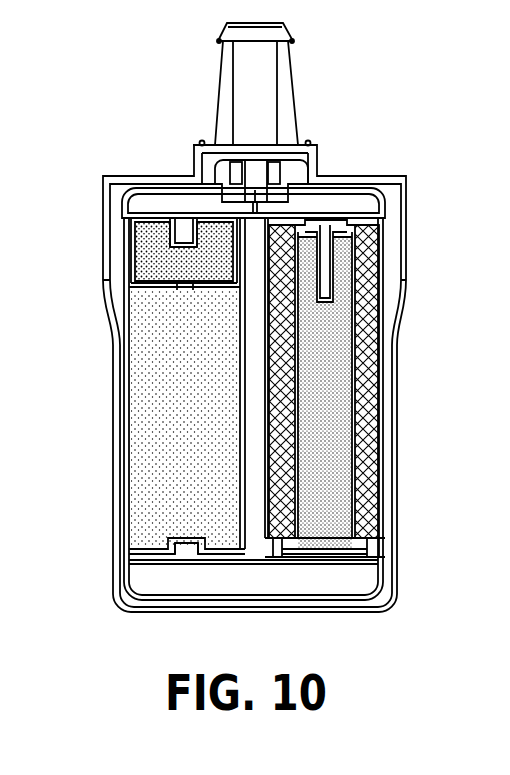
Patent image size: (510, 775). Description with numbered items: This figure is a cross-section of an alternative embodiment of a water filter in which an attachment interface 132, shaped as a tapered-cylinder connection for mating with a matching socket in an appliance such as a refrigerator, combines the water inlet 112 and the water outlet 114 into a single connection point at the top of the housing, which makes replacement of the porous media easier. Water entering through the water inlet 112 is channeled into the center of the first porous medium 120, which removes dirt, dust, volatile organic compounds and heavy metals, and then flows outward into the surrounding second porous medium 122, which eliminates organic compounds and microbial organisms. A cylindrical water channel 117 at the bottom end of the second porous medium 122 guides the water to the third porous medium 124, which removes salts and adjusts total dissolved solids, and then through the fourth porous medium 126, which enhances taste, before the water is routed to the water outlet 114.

The water inlet 112 is at (302, 132).
The water outlet 114 is at (215, 125).
The cylindrical water channel 117 is at (382, 552).
The first porous medium 120 is at (357, 327).
The second porous medium 122 is at (373, 458).
The third porous medium 124 is at (142, 432).
The fourth porous medium 126 is at (145, 257).
The attachment interface 132 is at (292, 53).